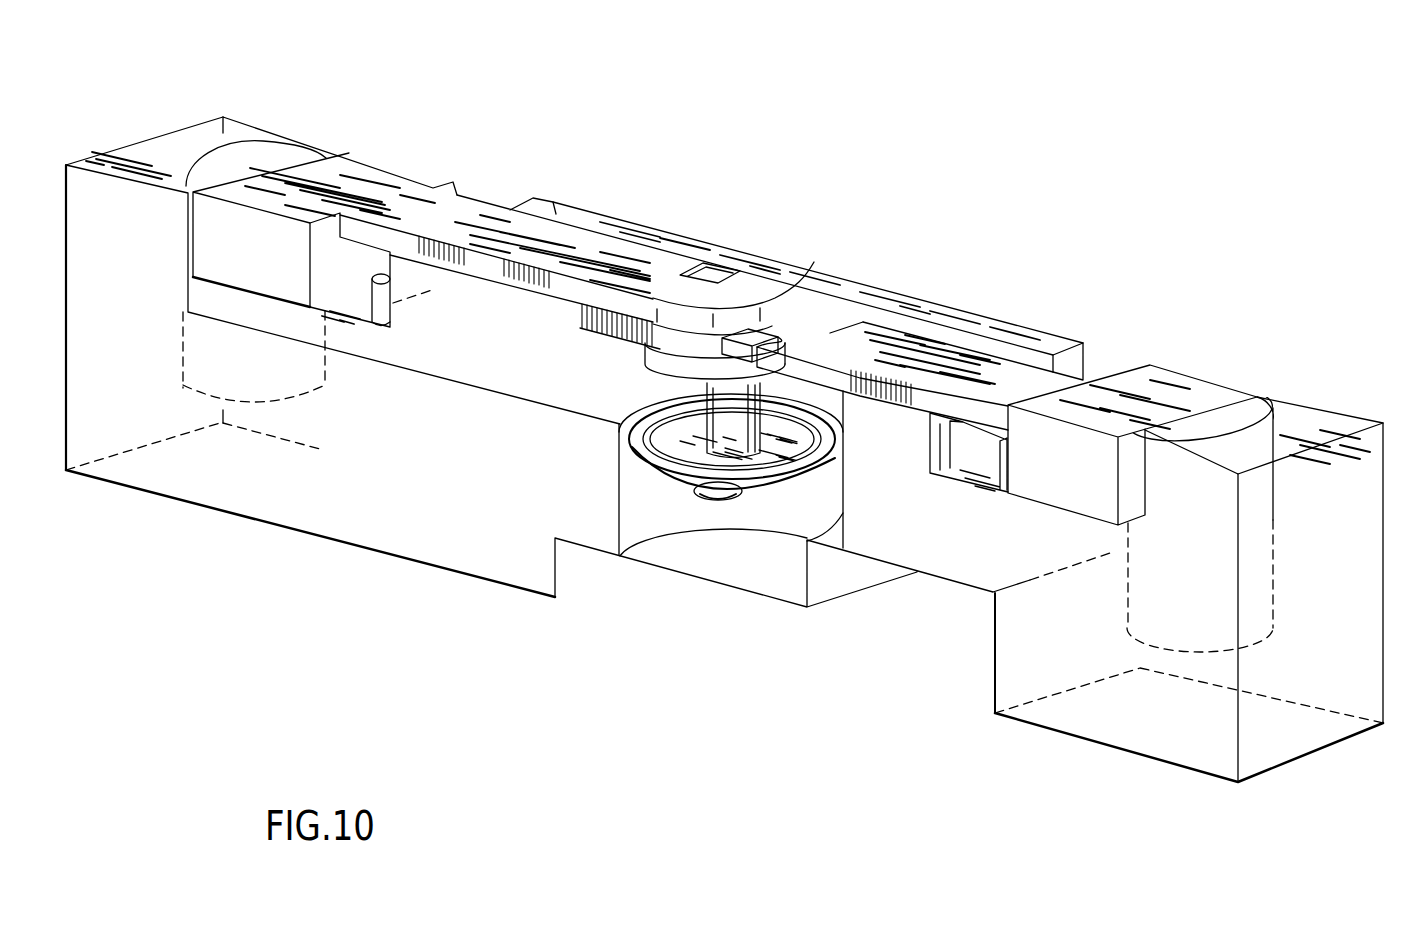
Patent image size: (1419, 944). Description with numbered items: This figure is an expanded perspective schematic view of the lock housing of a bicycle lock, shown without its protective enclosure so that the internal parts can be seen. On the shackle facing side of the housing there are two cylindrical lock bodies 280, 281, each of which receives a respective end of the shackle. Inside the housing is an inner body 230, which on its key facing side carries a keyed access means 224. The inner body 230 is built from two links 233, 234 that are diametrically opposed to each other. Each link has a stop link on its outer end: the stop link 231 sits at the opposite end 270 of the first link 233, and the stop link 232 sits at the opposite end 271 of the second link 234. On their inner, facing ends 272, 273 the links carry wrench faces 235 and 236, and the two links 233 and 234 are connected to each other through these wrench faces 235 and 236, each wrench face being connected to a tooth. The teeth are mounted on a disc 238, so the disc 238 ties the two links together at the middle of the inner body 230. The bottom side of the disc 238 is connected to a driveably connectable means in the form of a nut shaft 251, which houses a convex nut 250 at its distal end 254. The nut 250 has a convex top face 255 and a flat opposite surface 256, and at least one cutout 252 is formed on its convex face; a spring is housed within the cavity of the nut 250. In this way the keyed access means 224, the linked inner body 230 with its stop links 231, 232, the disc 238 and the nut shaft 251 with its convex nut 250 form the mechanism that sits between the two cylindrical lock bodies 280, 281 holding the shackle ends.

The keyed access means 224 is at (915, 685).
The inner body 230 is at (985, 300).
The stop link 231 is at (388, 178).
The stop link 232 is at (1172, 385).
The link 233 is at (553, 240).
The link 234 is at (1020, 380).
The wrench face 235 is at (700, 262).
The wrench face 236 is at (728, 333).
The disc 238 is at (805, 322).
The convex nut 250 is at (667, 470).
The nut shaft 251 is at (817, 380).
The cutout 252 is at (713, 492).
The distal end 254 is at (750, 447).
The convex top face 255 is at (745, 485).
The flat opposite surface 256 is at (640, 458).
The opposite end 270 is at (352, 170).
The opposite end 271 is at (1230, 393).
The facing end 272 is at (777, 283).
The facing end 273 is at (812, 327).
The cylindrical lock body 280 is at (215, 166).
The cylindrical lock body 281 is at (1273, 407).